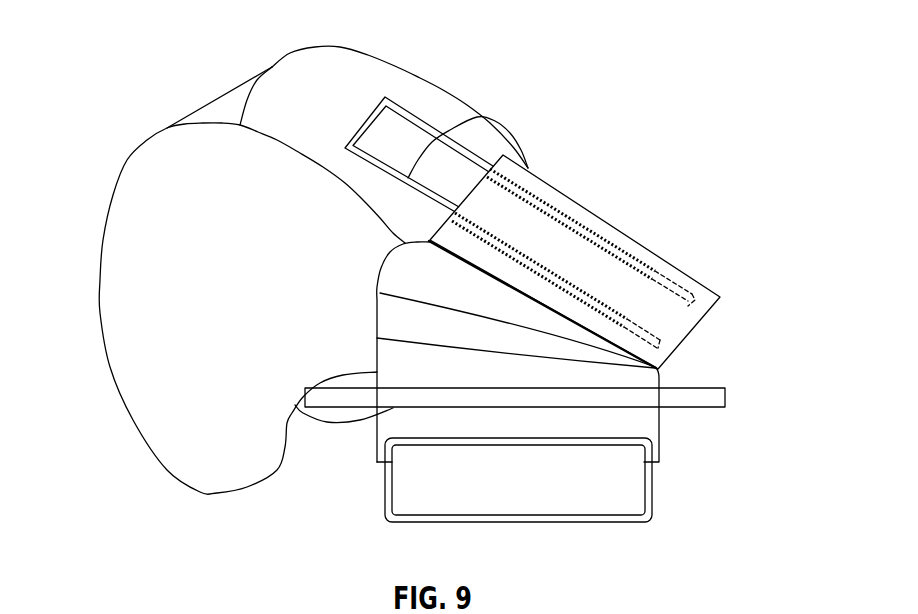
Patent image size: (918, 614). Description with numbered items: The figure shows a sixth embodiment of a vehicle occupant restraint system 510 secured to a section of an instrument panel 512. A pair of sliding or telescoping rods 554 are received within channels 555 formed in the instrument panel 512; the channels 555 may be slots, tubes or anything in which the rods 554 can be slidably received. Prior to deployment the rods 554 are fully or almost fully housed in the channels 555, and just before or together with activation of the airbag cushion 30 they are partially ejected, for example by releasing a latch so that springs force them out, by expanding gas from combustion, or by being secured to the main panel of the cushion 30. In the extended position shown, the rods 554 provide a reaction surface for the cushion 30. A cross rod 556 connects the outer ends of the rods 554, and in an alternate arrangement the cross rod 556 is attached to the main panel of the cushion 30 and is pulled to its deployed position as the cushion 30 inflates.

The airbag cushion 30 is at (213, 99).
The vehicle occupant restraint system 510 is at (571, 63).
The instrument panel 512 is at (618, 231).
The sliding or telescoping rods 554 is at (467, 150).
The channels 555 is at (700, 272).
The cross rod 556 is at (360, 123).